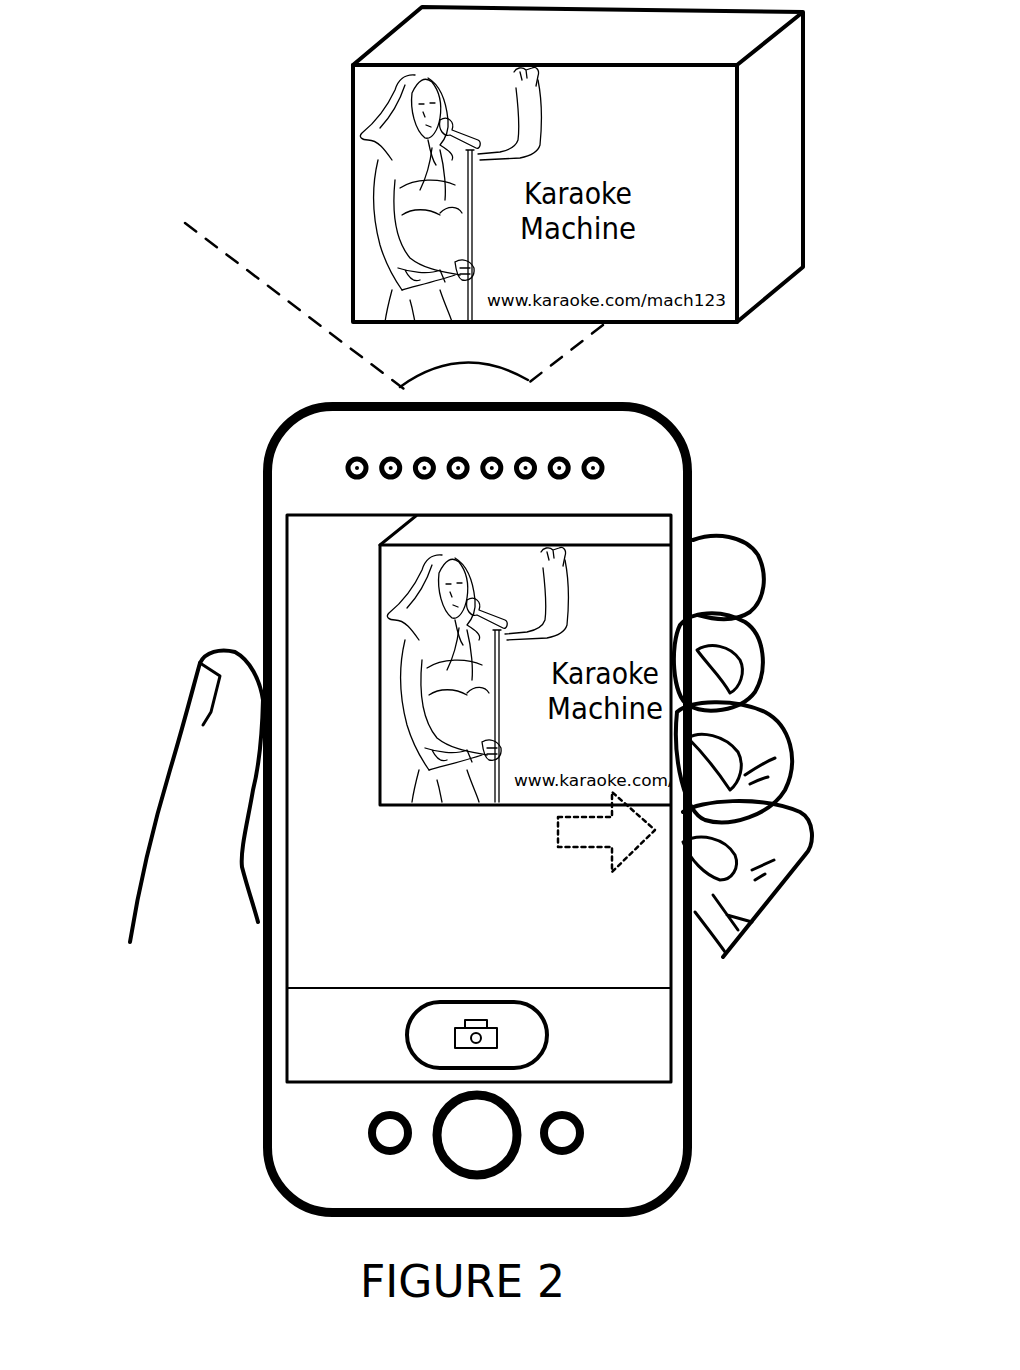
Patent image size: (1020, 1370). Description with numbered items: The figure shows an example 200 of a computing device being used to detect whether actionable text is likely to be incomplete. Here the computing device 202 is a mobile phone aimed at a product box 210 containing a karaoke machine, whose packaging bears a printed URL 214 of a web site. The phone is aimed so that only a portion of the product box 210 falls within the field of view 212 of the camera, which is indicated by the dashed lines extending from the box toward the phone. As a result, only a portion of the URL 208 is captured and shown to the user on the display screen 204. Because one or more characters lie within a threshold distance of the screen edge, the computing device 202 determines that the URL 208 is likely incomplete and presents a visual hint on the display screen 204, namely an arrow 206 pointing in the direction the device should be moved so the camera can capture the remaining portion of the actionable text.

The example 200 is at (134, 528).
The computing device 202 is at (265, 1162).
The display screen 204 is at (287, 932).
The arrow 206 is at (636, 865).
The URL 208 is at (632, 760).
The product box 210 is at (353, 100).
The field of view 212 is at (394, 307).
The URL 214 is at (697, 283).